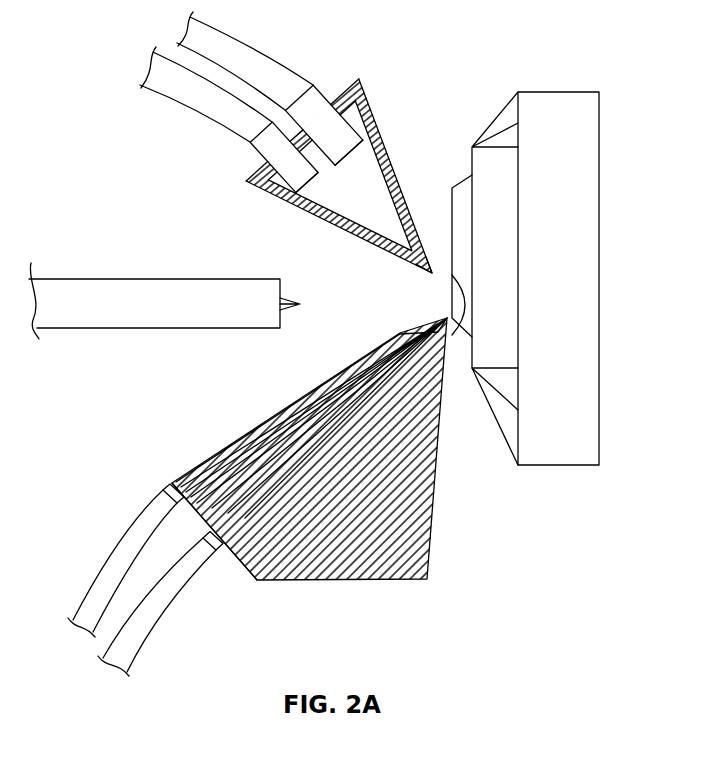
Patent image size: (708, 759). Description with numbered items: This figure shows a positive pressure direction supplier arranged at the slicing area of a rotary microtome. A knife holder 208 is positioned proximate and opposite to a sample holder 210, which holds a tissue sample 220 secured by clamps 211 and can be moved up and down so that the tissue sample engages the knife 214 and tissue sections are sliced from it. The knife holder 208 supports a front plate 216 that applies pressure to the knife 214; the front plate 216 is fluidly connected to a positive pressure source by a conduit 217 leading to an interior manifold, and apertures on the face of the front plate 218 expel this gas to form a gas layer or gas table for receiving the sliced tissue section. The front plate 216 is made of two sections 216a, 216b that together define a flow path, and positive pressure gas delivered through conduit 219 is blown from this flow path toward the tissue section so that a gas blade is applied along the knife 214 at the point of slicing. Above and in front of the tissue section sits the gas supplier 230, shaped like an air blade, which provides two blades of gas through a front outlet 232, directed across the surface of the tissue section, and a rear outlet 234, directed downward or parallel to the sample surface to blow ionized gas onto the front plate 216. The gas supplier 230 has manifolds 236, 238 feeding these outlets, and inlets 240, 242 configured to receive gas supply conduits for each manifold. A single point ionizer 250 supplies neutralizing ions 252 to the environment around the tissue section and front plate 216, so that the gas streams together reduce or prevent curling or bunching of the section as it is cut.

The knife holder 208 is at (257, 580).
The sample holder 210 is at (586, 126).
The clamps 211 is at (507, 421).
The knife 214 is at (452, 320).
The front plate 216 is at (170, 484).
The first section of front plate 216a is at (176, 492).
The second section of front plate 216b is at (223, 553).
The conduit 217 is at (118, 543).
The apertures on the face of the front plate 218 is at (367, 354).
The conduit 219 is at (132, 633).
The tissue sample 220 is at (457, 192).
The gas supplier 230 is at (337, 186).
The front outlet 232 is at (406, 200).
The rear outlet 234 is at (432, 275).
The manifold 236 is at (346, 145).
The manifold 238 is at (312, 188).
The inlet 240 is at (313, 89).
The inlet 242 is at (266, 147).
The single point ionizer 250 is at (103, 290).
The neutralizing ions 252 is at (296, 303).